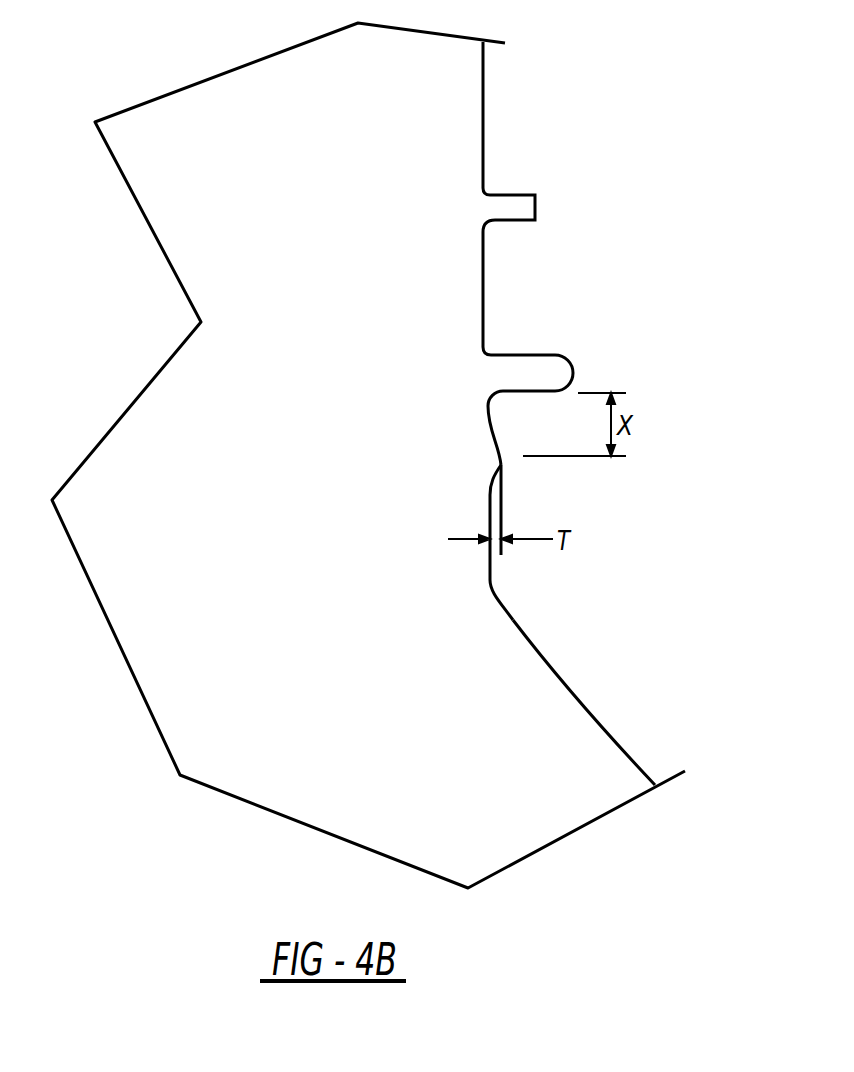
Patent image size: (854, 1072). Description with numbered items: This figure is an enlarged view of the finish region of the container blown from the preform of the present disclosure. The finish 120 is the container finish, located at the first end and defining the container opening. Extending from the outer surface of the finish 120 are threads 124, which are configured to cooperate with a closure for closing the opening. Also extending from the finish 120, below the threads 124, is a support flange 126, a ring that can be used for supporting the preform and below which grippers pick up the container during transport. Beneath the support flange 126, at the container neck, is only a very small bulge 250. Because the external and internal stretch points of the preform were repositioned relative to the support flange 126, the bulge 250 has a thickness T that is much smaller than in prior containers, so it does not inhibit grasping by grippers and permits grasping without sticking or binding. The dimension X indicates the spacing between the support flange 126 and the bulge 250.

The finish portion 120 is at (485, 122).
The threads 124 is at (537, 208).
The support flange 126 is at (557, 352).
The bulge 250 is at (503, 465).